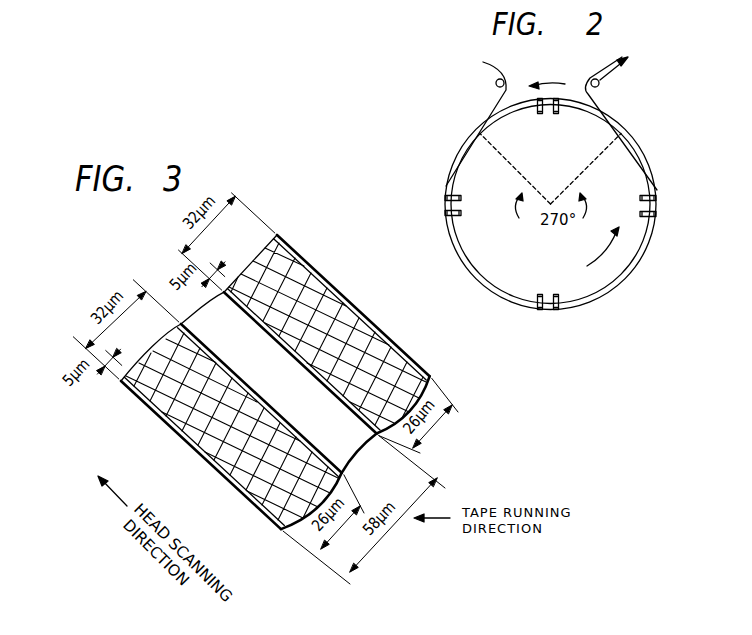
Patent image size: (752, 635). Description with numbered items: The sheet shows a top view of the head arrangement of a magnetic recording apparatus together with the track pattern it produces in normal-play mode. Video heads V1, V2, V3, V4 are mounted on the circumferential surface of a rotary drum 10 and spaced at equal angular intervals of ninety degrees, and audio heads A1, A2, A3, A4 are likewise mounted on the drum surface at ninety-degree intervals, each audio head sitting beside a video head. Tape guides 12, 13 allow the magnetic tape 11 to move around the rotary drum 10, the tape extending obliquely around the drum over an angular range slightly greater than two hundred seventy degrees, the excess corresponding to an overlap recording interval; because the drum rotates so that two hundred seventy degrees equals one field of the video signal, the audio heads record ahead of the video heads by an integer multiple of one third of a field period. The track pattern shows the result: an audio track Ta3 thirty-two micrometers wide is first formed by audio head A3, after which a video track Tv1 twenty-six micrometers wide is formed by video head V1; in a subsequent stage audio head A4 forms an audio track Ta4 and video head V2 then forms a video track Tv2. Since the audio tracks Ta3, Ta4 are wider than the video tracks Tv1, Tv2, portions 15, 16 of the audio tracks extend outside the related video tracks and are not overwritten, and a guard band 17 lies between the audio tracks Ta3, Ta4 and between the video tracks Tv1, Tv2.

In FIG. 2, the rotary drum 10 is at (633, 151).
In FIG. 2, the magnetic tape 11 is at (633, 268).
In FIG. 2, the tape guide 12 is at (496, 84).
In FIG. 2, the tape guide 13 is at (600, 85).
In FIG. 2, the audio head A1 is at (558, 310).
In FIG. 2, the audio head A2 is at (652, 196).
In FIG. 2, the audio head A3 is at (540, 116).
In FIG. 2, the audio head A4 is at (462, 213).
In FIG. 2, the video head V1 is at (539, 310).
In FIG. 2, the video head V2 is at (653, 220).
In FIG. 2, the video head V3 is at (558, 116).
In FIG. 2, the video head V4 is at (462, 198).
In FIG. 3, the portion of audio track 15 is at (246, 381).
In FIG. 3, the portion of audio track 16 is at (372, 330).
In FIG. 3, the guard band 17 is at (352, 443).
In FIG. 3, the audio track Ta3 is at (163, 428).
In FIG. 3, the audio track Ta4 is at (401, 372).
In FIG. 3, the video track Tv1 is at (208, 470).
In FIG. 3, the video track Tv2 is at (331, 306).